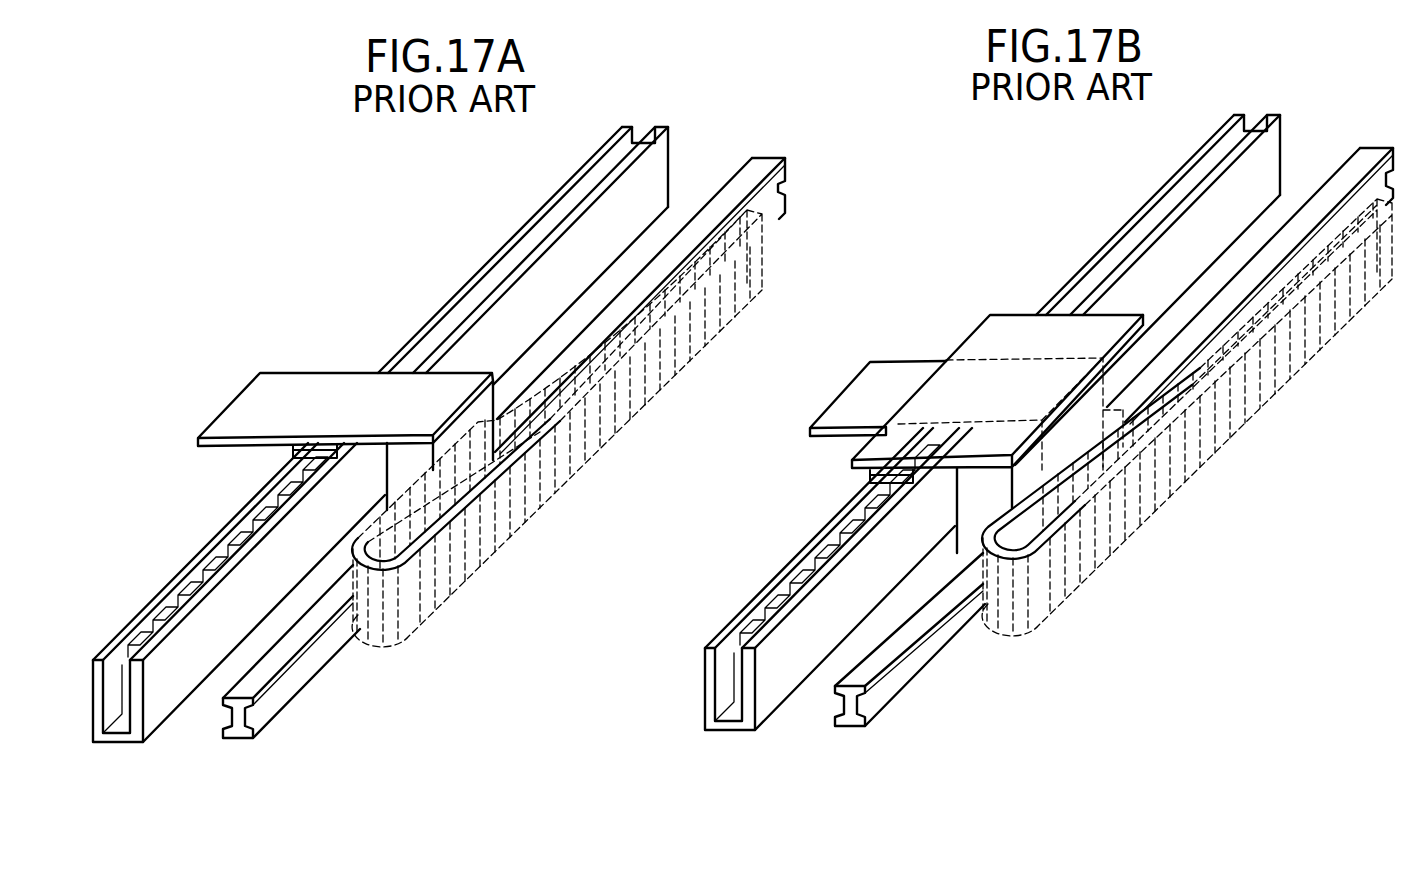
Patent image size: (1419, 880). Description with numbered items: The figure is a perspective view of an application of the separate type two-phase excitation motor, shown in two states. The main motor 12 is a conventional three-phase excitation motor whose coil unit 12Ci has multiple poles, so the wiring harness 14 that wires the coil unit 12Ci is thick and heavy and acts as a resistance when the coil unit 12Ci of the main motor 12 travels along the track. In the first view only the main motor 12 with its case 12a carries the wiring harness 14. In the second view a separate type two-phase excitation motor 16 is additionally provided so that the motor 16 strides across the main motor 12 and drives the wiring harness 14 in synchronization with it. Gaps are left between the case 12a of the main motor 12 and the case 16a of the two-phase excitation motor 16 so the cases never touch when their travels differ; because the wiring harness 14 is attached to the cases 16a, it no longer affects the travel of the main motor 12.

In FIG. 17A, the main motor 12 is at (345, 389).
In FIG. 17B, the main motor 12 is at (966, 428).
In FIG. 17A, the case for the main motor 12a is at (282, 390).
In FIG. 17B, the case for the main motor 12a is at (872, 390).
In FIG. 17A, the coil unit 12Ci is at (300, 452).
In FIG. 17B, the coil unit 12Ci is at (867, 477).
In FIG. 17A, the wiring harness 14 is at (485, 577).
In FIG. 17B, the wiring harness 14 is at (1187, 417).
In FIG. 17B, the separate type two-phase excitation motor 16 is at (997, 382).
In FIG. 17B, the case for the two-phase excitation motor 16a is at (985, 340).